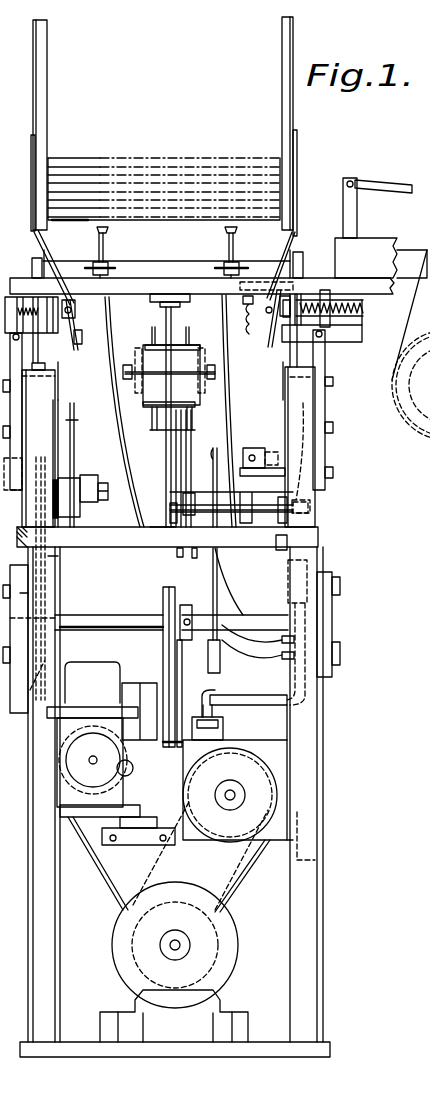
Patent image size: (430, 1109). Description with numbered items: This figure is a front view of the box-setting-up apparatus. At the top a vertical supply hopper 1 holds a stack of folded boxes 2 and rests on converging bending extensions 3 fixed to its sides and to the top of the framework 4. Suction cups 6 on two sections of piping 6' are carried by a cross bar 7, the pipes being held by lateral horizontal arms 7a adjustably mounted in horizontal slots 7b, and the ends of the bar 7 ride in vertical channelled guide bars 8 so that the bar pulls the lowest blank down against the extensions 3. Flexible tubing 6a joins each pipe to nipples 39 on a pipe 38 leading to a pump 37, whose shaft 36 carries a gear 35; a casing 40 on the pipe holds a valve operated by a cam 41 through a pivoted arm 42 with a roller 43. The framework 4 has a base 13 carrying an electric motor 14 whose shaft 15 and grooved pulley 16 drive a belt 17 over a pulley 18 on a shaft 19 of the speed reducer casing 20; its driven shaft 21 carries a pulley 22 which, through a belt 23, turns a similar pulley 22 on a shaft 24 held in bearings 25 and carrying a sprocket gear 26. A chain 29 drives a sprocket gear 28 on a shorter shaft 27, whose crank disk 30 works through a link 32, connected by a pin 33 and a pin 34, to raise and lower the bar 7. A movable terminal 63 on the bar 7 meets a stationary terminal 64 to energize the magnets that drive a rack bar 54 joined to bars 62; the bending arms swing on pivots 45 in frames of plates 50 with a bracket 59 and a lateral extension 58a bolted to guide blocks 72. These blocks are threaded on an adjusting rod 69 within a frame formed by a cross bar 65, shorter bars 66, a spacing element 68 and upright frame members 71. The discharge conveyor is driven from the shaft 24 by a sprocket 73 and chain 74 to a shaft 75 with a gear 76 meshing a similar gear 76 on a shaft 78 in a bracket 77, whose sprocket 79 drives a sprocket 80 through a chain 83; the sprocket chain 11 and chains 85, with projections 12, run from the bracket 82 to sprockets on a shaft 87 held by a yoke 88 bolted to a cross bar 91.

The supply hopper 1 is at (41, 70).
The folded boxes 2 is at (95, 196).
The converging extensions 3 is at (32, 234).
The framework 4 is at (33, 862).
The suction cups 6 is at (162, 238).
The sections of piping 6' is at (166, 255).
The flexible tubing 6a is at (110, 360).
The cross bar 7 is at (154, 266).
The lateral horizontal arms 7a is at (109, 264).
The horizontal slots 7b is at (222, 266).
The channelled guide bars 8 is at (33, 250).
The sprocket chain 11 is at (145, 345).
The projections 12 is at (189, 336).
The base 13 is at (330, 1050).
The electric motor 14 is at (232, 1002).
The shaft 15 is at (176, 940).
The grooved pulley 16 is at (235, 930).
The belt 17 is at (93, 862).
The pulley 18 is at (133, 768).
The shaft 19 is at (80, 758).
The casing 20 is at (77, 670).
The driven shaft 21 is at (182, 705).
The pulley 22 is at (163, 607).
The belt 23 is at (168, 640).
The shaft 24 is at (70, 625).
The bearings 25 is at (334, 600).
The sprocket gear 26 is at (220, 665).
The shaft 27 is at (262, 525).
The sprocket gear 28 is at (214, 470).
The chain 29 is at (213, 572).
The crank disk 30 is at (176, 472).
The link 32 is at (155, 300).
The pin 33 is at (163, 432).
The pin or bolt 34 is at (165, 330).
The gear 35 is at (238, 848).
The pump shaft 36 is at (226, 800).
The pump 37 is at (276, 845).
The pipe 38 is at (247, 706).
The nipples 39 is at (283, 660).
The casing 40 is at (288, 592).
The cam 41 is at (300, 470).
The pivoted arm 42 is at (318, 537).
The roller 43 is at (276, 548).
The pivots 45 is at (76, 322).
The plates 50 is at (362, 325).
The rack bar 54 is at (343, 205).
The lateral extension 58a is at (34, 264).
The bracket 59 is at (368, 244).
The bars 62 is at (374, 184).
The movable terminal 63 is at (249, 320).
The stationary terminal 64 is at (254, 448).
The cross bar 65 is at (366, 288).
The shorter bars 66 is at (341, 342).
The spacing element 68 is at (76, 345).
The adjusting rod 69 is at (363, 310).
The upright frame members 71 is at (24, 388).
The guide blocks 72 is at (352, 280).
The sprocket 73 is at (8, 485).
The chain 74 is at (55, 558).
The shaft 75 is at (66, 505).
The gear 76 is at (53, 458).
The bracket 77 is at (101, 484).
The shaft 78 is at (85, 476).
The sprocket 79 is at (72, 446).
The sprocket 80 is at (413, 410).
The bracket 82 is at (24, 593).
The chain 83 is at (76, 410).
The chains 85 is at (143, 352).
The shaft 87 is at (163, 374).
The yoke 88 is at (183, 498).
The cross bar 91 is at (197, 535).